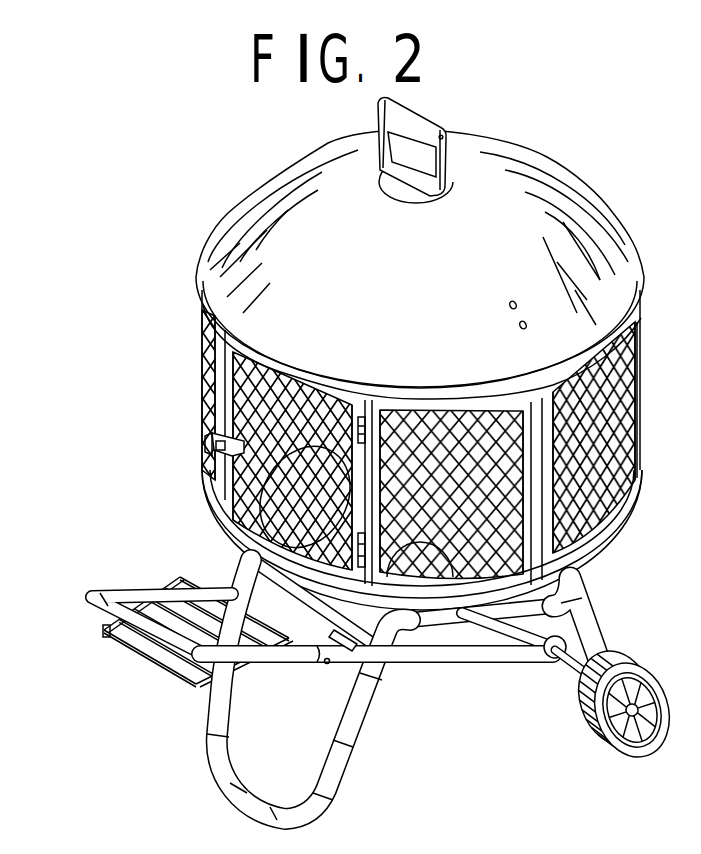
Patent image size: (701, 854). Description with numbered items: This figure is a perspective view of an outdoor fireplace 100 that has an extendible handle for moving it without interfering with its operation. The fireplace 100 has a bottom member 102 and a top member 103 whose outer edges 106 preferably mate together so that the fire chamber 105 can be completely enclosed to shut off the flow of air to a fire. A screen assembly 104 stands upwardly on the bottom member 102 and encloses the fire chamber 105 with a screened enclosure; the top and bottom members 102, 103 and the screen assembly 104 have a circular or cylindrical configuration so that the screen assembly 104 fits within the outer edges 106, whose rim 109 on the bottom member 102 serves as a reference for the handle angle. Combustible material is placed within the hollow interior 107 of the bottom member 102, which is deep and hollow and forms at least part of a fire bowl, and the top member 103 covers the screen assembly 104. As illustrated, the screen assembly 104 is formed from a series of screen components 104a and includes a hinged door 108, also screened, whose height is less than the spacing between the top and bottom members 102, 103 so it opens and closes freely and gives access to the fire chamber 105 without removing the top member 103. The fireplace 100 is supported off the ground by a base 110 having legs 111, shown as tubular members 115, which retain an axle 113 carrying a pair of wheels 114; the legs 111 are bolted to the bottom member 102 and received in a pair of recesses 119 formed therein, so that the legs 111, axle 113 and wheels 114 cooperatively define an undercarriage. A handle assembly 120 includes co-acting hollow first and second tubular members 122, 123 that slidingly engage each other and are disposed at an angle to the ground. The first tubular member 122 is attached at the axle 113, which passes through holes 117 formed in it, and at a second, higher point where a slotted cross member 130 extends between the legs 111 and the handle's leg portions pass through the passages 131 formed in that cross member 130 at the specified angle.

The outdoor fireplace 100 is at (587, 121).
The bottom member 102 is at (627, 518).
The top member 103 is at (580, 220).
The screen assembly 104 is at (611, 378).
The screen components 104a is at (638, 346).
The fire chamber 105 is at (602, 471).
The outer edges 106 is at (200, 470).
The hollow interior 107 is at (510, 538).
The hinged door 108 is at (290, 388).
The rim 109 is at (625, 485).
The base 110 is at (201, 741).
The legs 111 is at (217, 703).
The axle 113 is at (567, 680).
The wheels 114 is at (650, 668).
The tubular members 115 is at (348, 767).
The holes 117 is at (543, 667).
The recesses 119 is at (267, 490).
The handle assembly 120 is at (73, 592).
The first tubular member 122 is at (473, 667).
The second tubular member 123 is at (262, 667).
The cross member 130 is at (330, 665).
The passages 131 is at (365, 670).